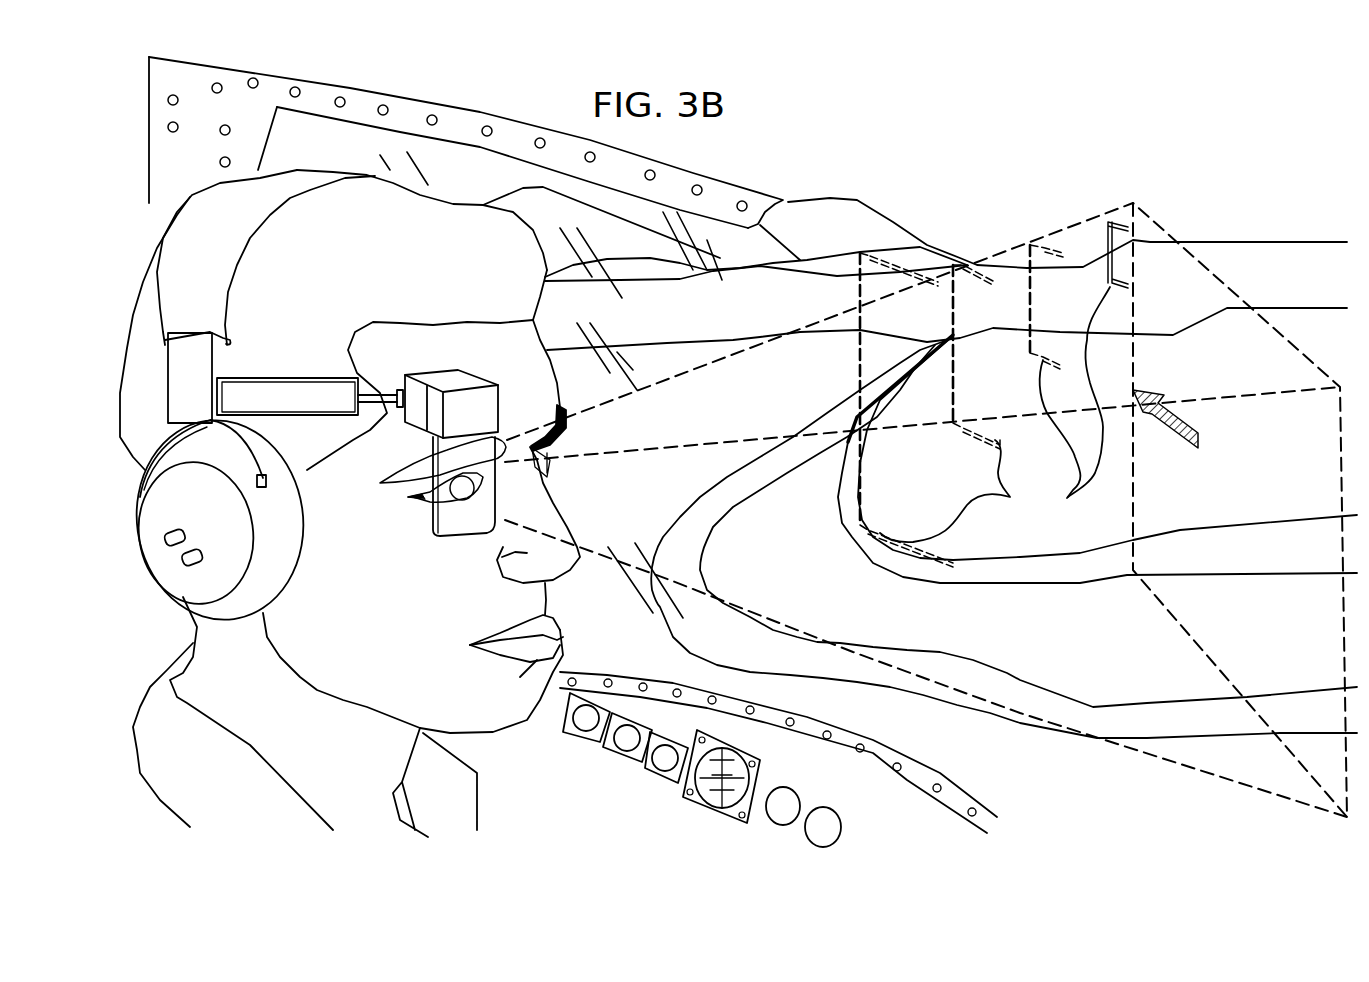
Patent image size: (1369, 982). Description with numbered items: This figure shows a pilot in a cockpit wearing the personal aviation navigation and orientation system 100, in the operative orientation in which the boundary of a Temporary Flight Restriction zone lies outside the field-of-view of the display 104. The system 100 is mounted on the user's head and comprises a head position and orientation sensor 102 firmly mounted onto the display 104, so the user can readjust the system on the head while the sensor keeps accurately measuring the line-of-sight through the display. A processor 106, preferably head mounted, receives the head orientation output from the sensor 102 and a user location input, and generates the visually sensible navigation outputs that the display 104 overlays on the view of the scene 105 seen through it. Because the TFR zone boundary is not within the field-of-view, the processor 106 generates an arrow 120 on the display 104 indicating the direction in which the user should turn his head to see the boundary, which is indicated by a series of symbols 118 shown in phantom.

The personal aviation navigation and orientation system 100 is at (406, 446).
The head position and orientation sensor 102 is at (450, 385).
The display 104 is at (445, 522).
The processor 106 is at (428, 378).
The scene 105 is at (1200, 642).
The series of symbols 118 is at (1097, 459).
The arrow 120 is at (1170, 433).